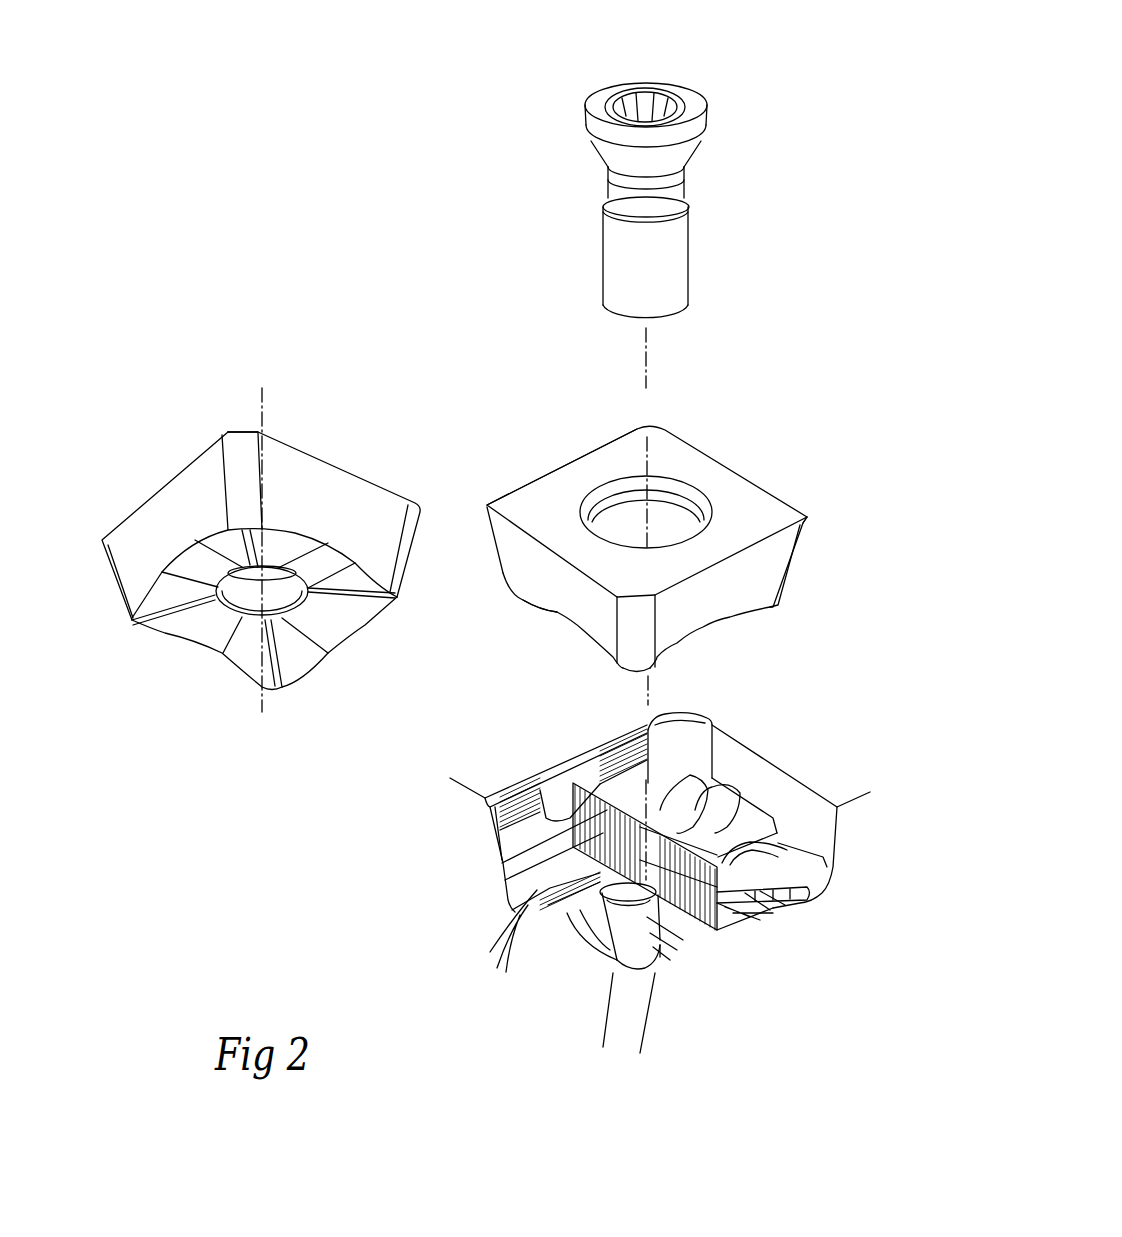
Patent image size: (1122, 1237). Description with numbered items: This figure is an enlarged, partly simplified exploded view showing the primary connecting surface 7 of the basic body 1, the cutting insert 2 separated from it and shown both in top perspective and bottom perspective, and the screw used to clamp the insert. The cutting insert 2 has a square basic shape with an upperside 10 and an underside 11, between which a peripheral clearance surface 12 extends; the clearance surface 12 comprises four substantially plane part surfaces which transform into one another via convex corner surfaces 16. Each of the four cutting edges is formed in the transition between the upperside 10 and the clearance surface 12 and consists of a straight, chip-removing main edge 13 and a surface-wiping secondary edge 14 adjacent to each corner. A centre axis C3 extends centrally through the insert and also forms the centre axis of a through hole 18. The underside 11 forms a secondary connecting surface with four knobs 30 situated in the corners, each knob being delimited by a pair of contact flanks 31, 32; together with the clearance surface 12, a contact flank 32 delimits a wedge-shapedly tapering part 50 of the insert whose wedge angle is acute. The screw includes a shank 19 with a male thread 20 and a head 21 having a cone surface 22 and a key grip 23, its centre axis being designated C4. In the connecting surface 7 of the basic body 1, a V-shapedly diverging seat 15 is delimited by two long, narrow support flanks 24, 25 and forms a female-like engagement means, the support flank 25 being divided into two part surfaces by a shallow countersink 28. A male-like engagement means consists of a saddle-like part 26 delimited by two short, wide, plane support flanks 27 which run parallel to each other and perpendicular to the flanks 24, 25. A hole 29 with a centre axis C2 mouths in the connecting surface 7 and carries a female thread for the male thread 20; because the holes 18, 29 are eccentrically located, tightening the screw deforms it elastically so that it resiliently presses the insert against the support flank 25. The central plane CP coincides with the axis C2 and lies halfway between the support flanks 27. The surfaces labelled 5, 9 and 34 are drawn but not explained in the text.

The basic body 1 is at (668, 1038).
The cutting insert 2 is at (813, 499).
The holder body surface 5 is at (542, 765).
The primary connecting surface 7 is at (727, 803).
The pocket side wall 9 is at (779, 803).
The upperside 10 is at (769, 531).
The underside 11 is at (562, 626).
The clearance surface 12 is at (740, 590).
The main edge 13 is at (543, 472).
The secondary edge 14 is at (485, 505).
The seat 15 is at (530, 873).
The corner surface 16 is at (651, 650).
The through hole 18 is at (687, 510).
The shank 19 is at (608, 190).
The male thread 20 is at (683, 272).
The head 21 is at (709, 122).
The cone surface 22 is at (606, 164).
The key grip 23 is at (657, 100).
The support flank 24 is at (548, 905).
The support flank 25 is at (512, 800).
The saddle-like part 26 is at (723, 917).
The support flank 27 is at (670, 950).
The countersink 28 is at (583, 778).
The hole 29 is at (633, 900).
The knob 30 is at (252, 528).
The contact flank 31 is at (365, 607).
The contact flank 32 is at (363, 577).
The bottom face segment 34 is at (185, 562).
The wedge part 50 is at (522, 576).
The centre axis of hole C2 is at (655, 783).
The centre axis of cutting insert C3 is at (645, 455).
The centre axis of screw C4 is at (648, 368).
The central plane CP is at (617, 840).